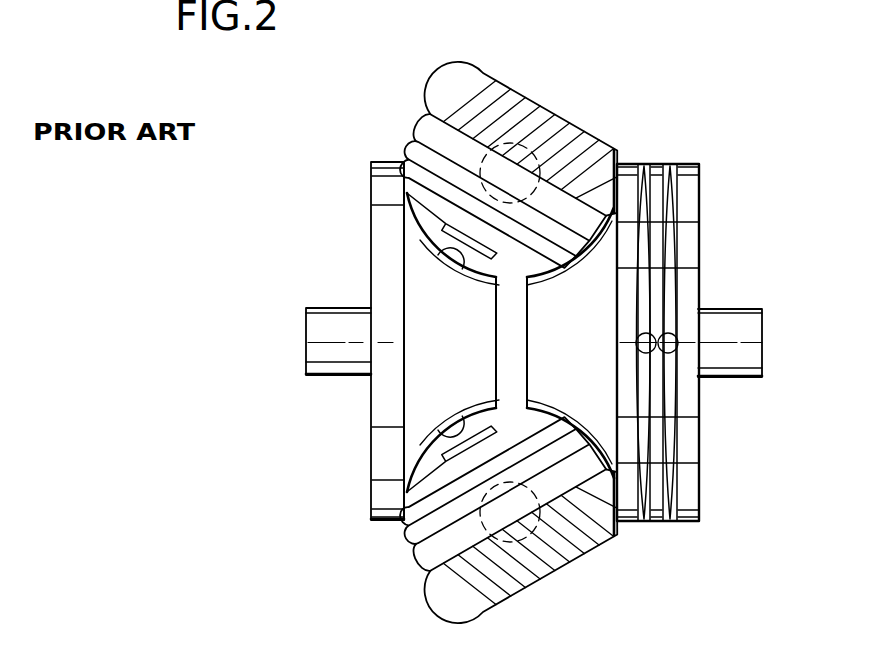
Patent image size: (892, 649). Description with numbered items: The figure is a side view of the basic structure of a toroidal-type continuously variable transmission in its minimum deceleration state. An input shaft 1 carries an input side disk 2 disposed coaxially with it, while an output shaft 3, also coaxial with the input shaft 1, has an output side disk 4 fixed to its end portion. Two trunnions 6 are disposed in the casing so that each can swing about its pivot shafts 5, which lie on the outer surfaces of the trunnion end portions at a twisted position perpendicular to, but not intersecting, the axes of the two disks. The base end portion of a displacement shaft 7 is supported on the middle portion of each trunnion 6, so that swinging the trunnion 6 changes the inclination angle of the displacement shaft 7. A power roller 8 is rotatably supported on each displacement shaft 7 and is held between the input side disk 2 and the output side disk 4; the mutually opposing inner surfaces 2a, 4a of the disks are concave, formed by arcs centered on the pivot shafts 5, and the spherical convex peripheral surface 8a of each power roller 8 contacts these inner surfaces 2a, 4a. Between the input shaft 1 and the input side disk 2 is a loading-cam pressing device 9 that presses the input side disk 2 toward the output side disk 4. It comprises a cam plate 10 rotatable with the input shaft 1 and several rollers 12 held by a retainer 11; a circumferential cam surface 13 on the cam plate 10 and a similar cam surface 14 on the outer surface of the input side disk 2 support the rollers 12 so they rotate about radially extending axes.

The input shaft 1 is at (750, 338).
The input side disk 2 is at (638, 234).
The inner surface 2a is at (612, 542).
The output shaft 3 is at (322, 330).
The output side disk 4 is at (378, 253).
The inner surface 4a is at (405, 277).
The pivot shaft 5 is at (533, 145).
The trunnion 6 is at (492, 87).
The displacement shaft 7 is at (450, 258).
The power roller 8 is at (413, 177).
The peripheral surface 8a is at (412, 193).
The pressing device 9 is at (708, 148).
The cam plate 10 is at (688, 188).
The retainer 11 is at (655, 163).
The roller 12 is at (645, 163).
The cam surface 13 is at (669, 362).
The cam surface 14 is at (643, 403).